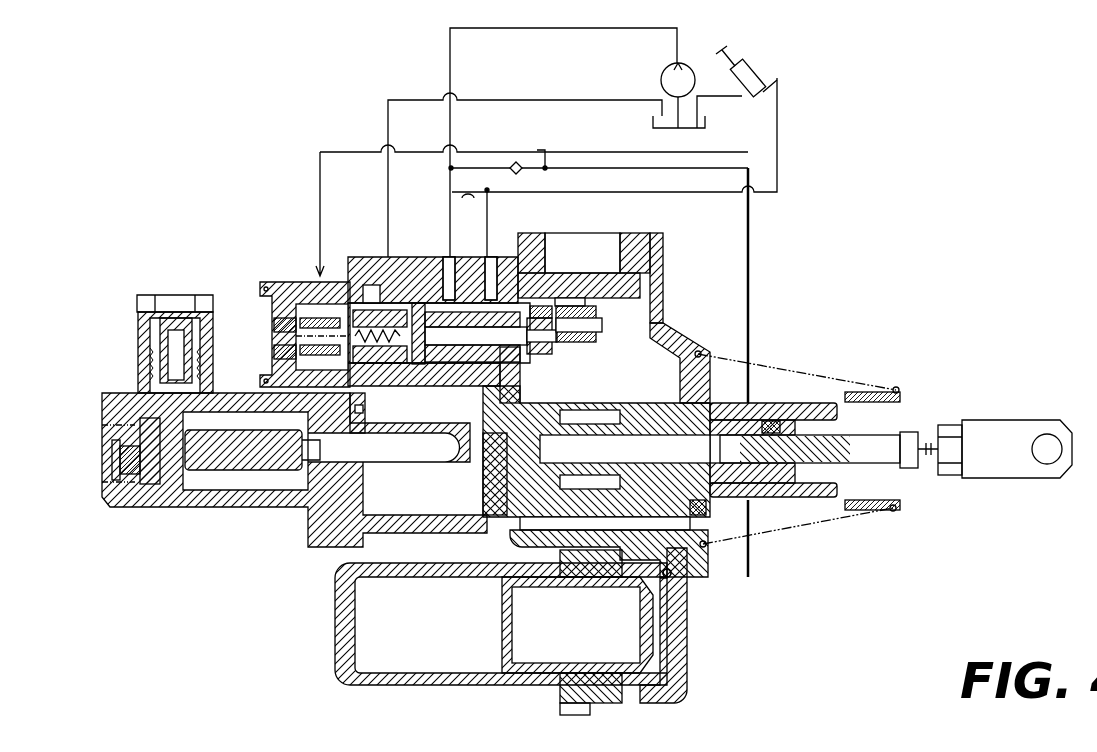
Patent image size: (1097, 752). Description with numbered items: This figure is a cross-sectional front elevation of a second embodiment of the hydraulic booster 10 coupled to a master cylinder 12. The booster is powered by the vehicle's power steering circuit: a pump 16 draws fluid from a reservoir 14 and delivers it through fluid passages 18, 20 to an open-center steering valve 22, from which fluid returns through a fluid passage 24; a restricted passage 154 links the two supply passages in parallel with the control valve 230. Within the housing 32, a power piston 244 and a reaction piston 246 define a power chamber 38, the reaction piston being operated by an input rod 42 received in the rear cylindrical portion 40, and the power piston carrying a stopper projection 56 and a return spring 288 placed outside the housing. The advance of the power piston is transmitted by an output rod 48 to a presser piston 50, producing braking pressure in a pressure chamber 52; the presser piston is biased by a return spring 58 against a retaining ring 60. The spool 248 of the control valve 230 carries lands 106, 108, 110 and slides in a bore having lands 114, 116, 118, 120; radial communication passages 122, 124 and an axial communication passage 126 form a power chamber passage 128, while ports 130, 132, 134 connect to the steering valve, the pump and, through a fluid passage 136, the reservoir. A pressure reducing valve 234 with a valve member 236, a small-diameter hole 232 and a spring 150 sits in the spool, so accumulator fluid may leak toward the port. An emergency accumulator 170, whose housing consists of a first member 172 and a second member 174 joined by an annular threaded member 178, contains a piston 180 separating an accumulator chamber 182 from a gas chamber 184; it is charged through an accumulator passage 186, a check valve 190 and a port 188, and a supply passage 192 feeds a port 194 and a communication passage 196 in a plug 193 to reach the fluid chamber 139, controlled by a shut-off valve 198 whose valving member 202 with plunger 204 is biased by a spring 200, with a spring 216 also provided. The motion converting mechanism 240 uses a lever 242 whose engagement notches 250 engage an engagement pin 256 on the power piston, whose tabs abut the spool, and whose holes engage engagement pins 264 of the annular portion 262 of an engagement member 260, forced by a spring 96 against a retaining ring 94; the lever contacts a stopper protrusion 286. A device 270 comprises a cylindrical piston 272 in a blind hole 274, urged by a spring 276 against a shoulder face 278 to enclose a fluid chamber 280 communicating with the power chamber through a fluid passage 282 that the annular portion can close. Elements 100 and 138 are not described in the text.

The hydraulic booster 10 is at (329, 570).
The master cylinder 12 is at (171, 538).
The reservoir 14 is at (707, 128).
The pump 16 is at (661, 79).
The fluid passage 18 is at (584, 28).
The fluid passage 20 is at (779, 127).
The steering valve 22 is at (758, 64).
The fluid passage 24 is at (722, 98).
The housing 32 is at (704, 525).
The power chamber 38 is at (703, 355).
The cylindrical portion 40 is at (790, 497).
The input rod 42 is at (883, 460).
The output rod 48 is at (378, 463).
The presser piston 50 is at (215, 472).
The pressure chamber 52 is at (126, 406).
The stopper projection 56 is at (707, 510).
The return spring 58 is at (145, 484).
The retaining ring 60 is at (360, 411).
The retaining ring 94 is at (600, 420).
The spring 96 is at (767, 420).
The valve housing 100 is at (615, 232).
The land 106 is at (470, 292).
The land 108 is at (414, 292).
The land 110 is at (402, 364).
The land 114 is at (461, 277).
The land 116 is at (435, 243).
The land 118 is at (408, 277).
The land 120 is at (383, 300).
The radial communication passage 122 is at (419, 364).
The radial communication passage 124 is at (538, 342).
The axial communication passage 126 is at (525, 354).
The power chamber passage 128 is at (446, 360).
The port 130 is at (493, 256).
The port 132 is at (455, 256).
The port 134 is at (398, 256).
The fluid passage 136 is at (553, 99).
The passage 138 is at (375, 290).
The fluid chamber 139 is at (355, 372).
The spring 150 is at (583, 312).
The restricted passage 154 is at (473, 183).
The emergency accumulator 170 is at (720, 614).
The first member 172 is at (689, 647).
The second member 174 is at (393, 686).
The annular threaded member 178 is at (572, 704).
The piston 180 is at (682, 633).
The accumulator chamber 182 is at (682, 672).
The gas chamber 184 is at (460, 674).
The accumulator passage 186 is at (752, 240).
The port 188 is at (671, 575).
The check valve 190 is at (523, 172).
The supply passage 192 is at (537, 150).
The plug 193 is at (262, 362).
The port 194 is at (318, 287).
The communication passage 196 is at (295, 287).
The shut-off valve 198 is at (242, 304).
The spring 200 is at (284, 290).
The valving member 202 is at (331, 287).
The plunger 204 is at (342, 283).
The spring 216 is at (262, 330).
The control valve 230 is at (424, 256).
The small-diameter hole 232 is at (533, 320).
The pressure reducing valve 234 is at (568, 298).
The valve member 236 is at (665, 320).
The motion converting mechanism 240 is at (694, 342).
The lever 242 is at (712, 380).
The power piston 244 is at (483, 502).
The reaction piston 246 is at (803, 430).
The spool 248 is at (462, 372).
The engagement notches 250 is at (655, 475).
The engagement pin 256 is at (704, 547).
The engagement member 260 is at (629, 402).
The annular portion 262 is at (638, 418).
The engagement pins 264 is at (590, 444).
The device 270 is at (552, 470).
The cylindrical piston 272 is at (569, 483).
The blind hole 274 is at (620, 495).
The spring 276 is at (478, 488).
The shoulder face 278 is at (598, 420).
The fluid chamber 280 is at (549, 483).
The fluid passage 282 is at (595, 456).
The stopper protrusion 286 is at (664, 302).
The return spring 288 is at (893, 512).